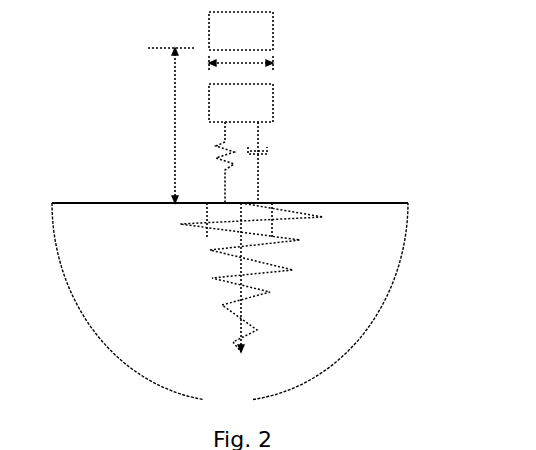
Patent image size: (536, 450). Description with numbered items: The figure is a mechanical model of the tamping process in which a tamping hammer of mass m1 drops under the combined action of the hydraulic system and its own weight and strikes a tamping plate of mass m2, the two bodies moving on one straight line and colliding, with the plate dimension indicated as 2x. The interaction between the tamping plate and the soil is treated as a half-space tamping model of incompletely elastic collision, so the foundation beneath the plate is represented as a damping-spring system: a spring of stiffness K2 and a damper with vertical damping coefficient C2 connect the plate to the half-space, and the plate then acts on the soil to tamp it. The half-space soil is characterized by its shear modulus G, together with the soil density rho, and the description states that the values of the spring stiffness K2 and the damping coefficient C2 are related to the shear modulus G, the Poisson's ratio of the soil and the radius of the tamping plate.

The mass of the tamping hammer m1 is at (241, 31).
The mass of the tamping plate m2 is at (241, 103).
The mass width dimension 2x is at (241, 61).
The spring stiffness K2 is at (213, 162).
The vertical damping coefficient C2 is at (270, 162).
The shear modulus of the soil G is at (251, 277).
The soil density rho is at (230, 301).